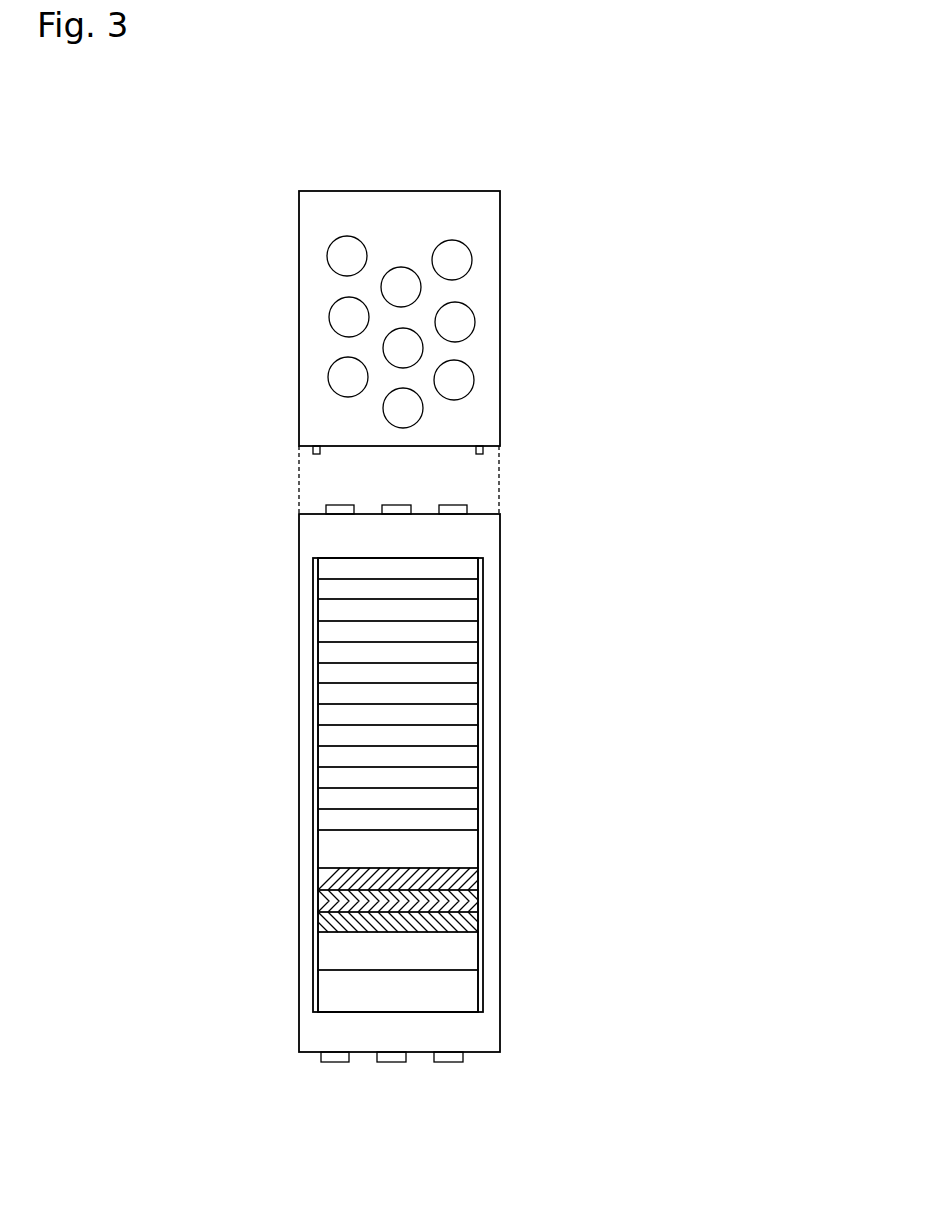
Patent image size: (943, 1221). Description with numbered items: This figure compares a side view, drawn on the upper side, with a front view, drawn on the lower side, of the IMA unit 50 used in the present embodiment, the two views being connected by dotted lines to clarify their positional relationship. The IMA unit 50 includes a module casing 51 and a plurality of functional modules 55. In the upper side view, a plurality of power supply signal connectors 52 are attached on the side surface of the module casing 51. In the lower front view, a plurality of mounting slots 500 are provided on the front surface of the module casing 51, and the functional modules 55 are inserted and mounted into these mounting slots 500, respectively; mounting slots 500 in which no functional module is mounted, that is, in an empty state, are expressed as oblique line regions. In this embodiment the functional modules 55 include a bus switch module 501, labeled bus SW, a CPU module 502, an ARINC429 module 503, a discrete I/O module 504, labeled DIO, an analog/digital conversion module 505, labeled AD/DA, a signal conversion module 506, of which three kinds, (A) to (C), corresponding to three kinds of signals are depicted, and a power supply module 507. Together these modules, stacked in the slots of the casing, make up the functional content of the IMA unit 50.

The IMA unit 50 is at (403, 626).
The module casing 51 is at (308, 353).
The power supply signal connector 52 is at (466, 377).
The functional module 55 is at (372, 773).
The mounting slot 500 is at (472, 895).
The bus switch module 501 is at (320, 571).
The CPU module 502 is at (320, 612).
The ARINC429 module 503 is at (320, 652).
The discrete I/O module 504 is at (322, 694).
The analog/digital conversion module 505 is at (322, 757).
The signal conversion module 506 is at (320, 797).
The power supply module 507 is at (346, 968).